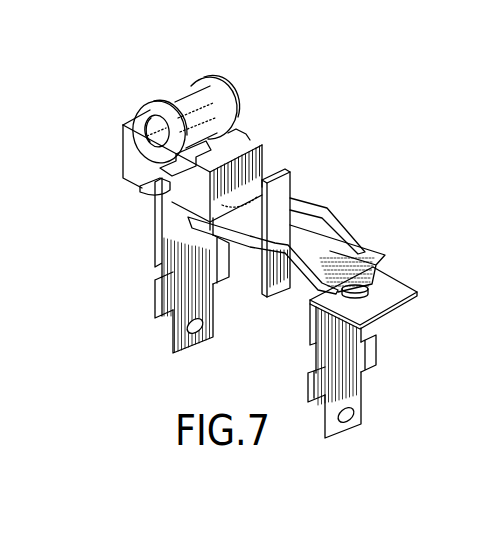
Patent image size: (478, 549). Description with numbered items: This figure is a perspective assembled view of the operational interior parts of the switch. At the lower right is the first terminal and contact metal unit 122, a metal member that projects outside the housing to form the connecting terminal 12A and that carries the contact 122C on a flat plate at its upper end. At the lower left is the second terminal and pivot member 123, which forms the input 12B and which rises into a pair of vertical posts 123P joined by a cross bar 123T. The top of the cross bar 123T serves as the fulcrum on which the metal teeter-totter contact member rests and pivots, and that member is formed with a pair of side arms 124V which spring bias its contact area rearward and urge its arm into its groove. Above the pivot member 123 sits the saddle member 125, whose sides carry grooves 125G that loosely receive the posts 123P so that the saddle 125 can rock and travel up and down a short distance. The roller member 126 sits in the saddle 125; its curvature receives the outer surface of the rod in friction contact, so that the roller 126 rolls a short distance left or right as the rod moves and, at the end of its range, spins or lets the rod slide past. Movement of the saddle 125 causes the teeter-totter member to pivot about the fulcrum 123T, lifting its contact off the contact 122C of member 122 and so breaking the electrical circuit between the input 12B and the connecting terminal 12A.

The roller member 126 is at (217, 87).
The saddle member 125 is at (252, 142).
The grooves 125G is at (158, 167).
The vertical posts 123P is at (165, 192).
The cross bar 123T is at (178, 217).
The second terminal and pivot member 123 is at (190, 257).
The input 12B is at (212, 333).
The side arms 124V is at (347, 219).
The contact 122C is at (393, 300).
The first terminal and contact metal unit 122 is at (330, 330).
The connecting terminal 12A is at (356, 421).